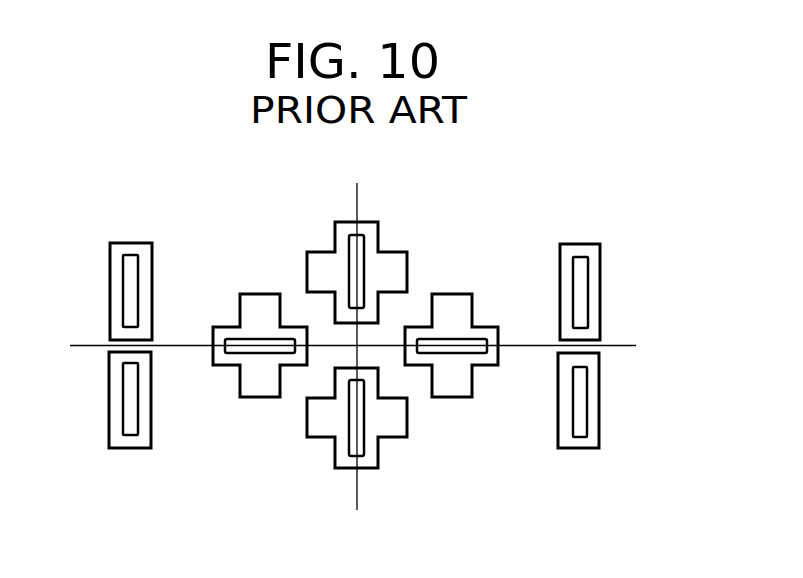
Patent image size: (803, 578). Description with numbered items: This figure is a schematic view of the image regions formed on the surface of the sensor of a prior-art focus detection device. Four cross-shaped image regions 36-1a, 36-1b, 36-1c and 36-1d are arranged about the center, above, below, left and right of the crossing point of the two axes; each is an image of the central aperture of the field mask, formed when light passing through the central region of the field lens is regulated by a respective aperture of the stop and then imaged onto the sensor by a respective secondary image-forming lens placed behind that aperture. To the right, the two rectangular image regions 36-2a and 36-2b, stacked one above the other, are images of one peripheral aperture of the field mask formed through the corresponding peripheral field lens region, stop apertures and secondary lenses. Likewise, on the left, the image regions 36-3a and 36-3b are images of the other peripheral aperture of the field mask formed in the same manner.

The image region 36-1a is at (400, 248).
The image region 36-1b is at (378, 465).
The image region 36-1c is at (448, 398).
The image region 36-1d is at (255, 398).
The image region 36-2a is at (589, 242).
The image region 36-2b is at (572, 450).
The image region 36-3a is at (135, 242).
The image region 36-3b is at (132, 450).